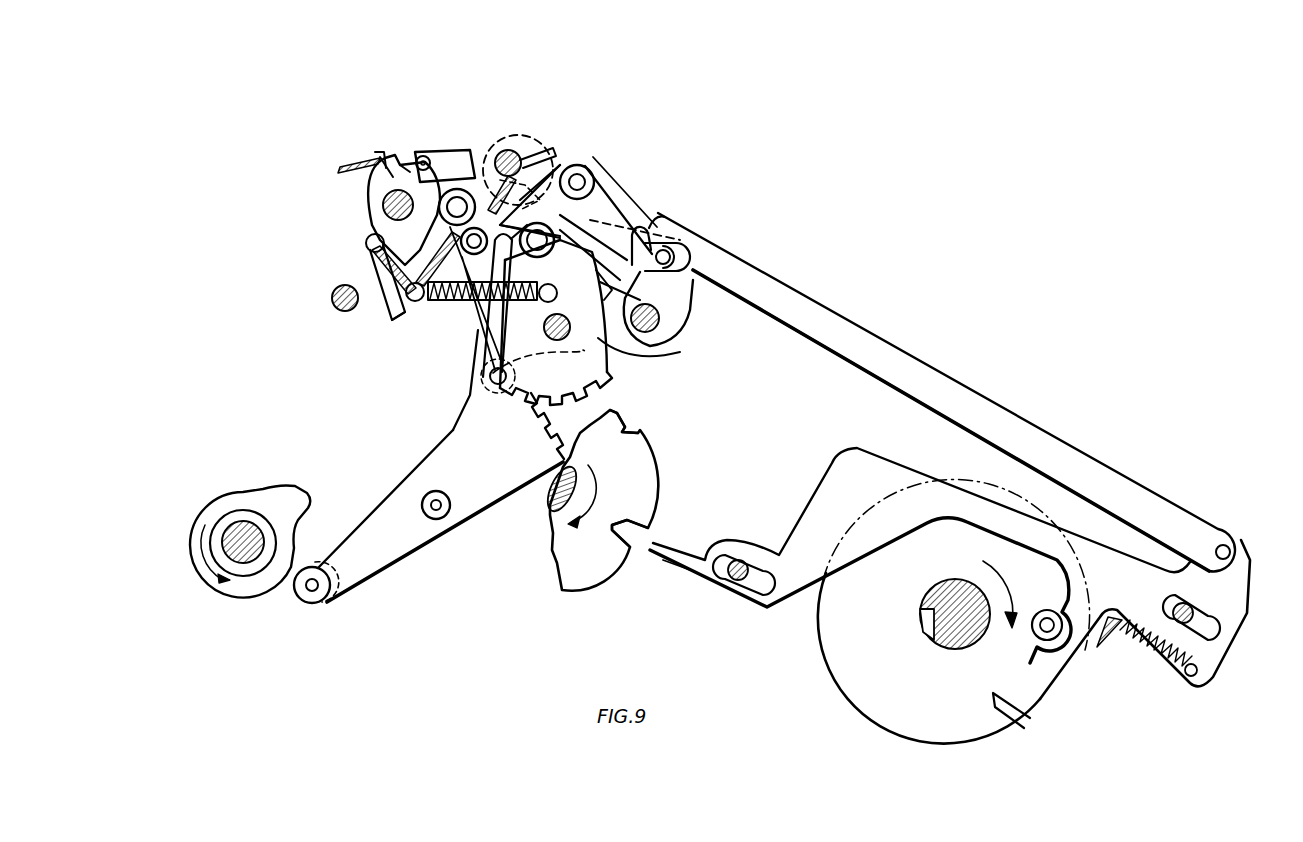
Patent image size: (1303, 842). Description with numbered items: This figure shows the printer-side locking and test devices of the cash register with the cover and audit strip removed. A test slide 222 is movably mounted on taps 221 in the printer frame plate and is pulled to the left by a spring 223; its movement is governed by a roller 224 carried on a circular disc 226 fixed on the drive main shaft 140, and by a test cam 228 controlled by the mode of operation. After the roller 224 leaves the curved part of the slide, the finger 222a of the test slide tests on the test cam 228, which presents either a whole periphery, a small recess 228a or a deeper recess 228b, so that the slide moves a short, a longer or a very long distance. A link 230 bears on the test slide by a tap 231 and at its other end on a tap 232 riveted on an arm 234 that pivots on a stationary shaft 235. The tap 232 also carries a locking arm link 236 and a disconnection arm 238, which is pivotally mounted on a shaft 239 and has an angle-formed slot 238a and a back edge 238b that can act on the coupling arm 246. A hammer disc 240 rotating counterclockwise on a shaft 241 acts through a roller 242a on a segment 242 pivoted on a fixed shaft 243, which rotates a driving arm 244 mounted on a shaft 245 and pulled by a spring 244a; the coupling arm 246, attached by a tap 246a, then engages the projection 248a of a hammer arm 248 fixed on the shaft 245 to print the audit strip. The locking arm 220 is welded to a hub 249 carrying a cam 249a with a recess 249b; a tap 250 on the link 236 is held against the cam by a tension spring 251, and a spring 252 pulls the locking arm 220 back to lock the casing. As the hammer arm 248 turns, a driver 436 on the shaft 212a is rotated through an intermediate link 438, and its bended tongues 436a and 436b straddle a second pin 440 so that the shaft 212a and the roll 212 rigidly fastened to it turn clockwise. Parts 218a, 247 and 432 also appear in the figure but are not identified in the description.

The drive main shaft 140 is at (930, 630).
The roll 212 is at (515, 140).
The shaft 212a is at (554, 150).
The finger 218a is at (340, 169).
The locking arm 220 is at (380, 157).
The taps 221 is at (733, 566).
The test slide 222 is at (833, 470).
The finger 222a is at (665, 562).
The spring 223 is at (1150, 650).
The roller 224 is at (1052, 634).
The circular disc 226 is at (830, 625).
The test cam 228 is at (590, 572).
The small recess 228a is at (630, 424).
The deeper recess 228b is at (627, 533).
The link 230 is at (1101, 478).
The tap 231 is at (1230, 550).
The tap 232 is at (690, 257).
The arm 234 is at (664, 320).
The stationary shaft 235 is at (666, 307).
The locking arm link 236 is at (443, 160).
The disconnection arm 238 is at (657, 200).
The angle-formed slot 238a is at (663, 200).
The back edge 238b is at (461, 240).
The shaft 239 is at (620, 210).
The hammer disc 240 is at (190, 532).
The shaft 241 is at (247, 530).
The segment 242 is at (381, 568).
The roller 242a is at (300, 600).
The fixed shaft 243 is at (440, 518).
The driving arm 244 is at (569, 322).
The spring 244a is at (470, 296).
The shaft 245 is at (575, 342).
The coupling arm 246 is at (480, 345).
The tap 246a is at (480, 370).
The link pivot 247 is at (668, 316).
The hammer arm 248 is at (487, 372).
The projection 248a is at (643, 350).
The hub 249 is at (383, 205).
The cam 249a is at (410, 168).
The recess 249b is at (387, 160).
The tap 250 is at (422, 158).
The tension spring 251 is at (400, 305).
The spring 252 is at (372, 268).
The cam 432 is at (538, 142).
The driver 436 is at (505, 150).
The bended tongue 436a is at (580, 182).
The bended tongue 436b is at (477, 152).
The intermediate link 438 is at (480, 336).
The second pin 440 is at (593, 155).